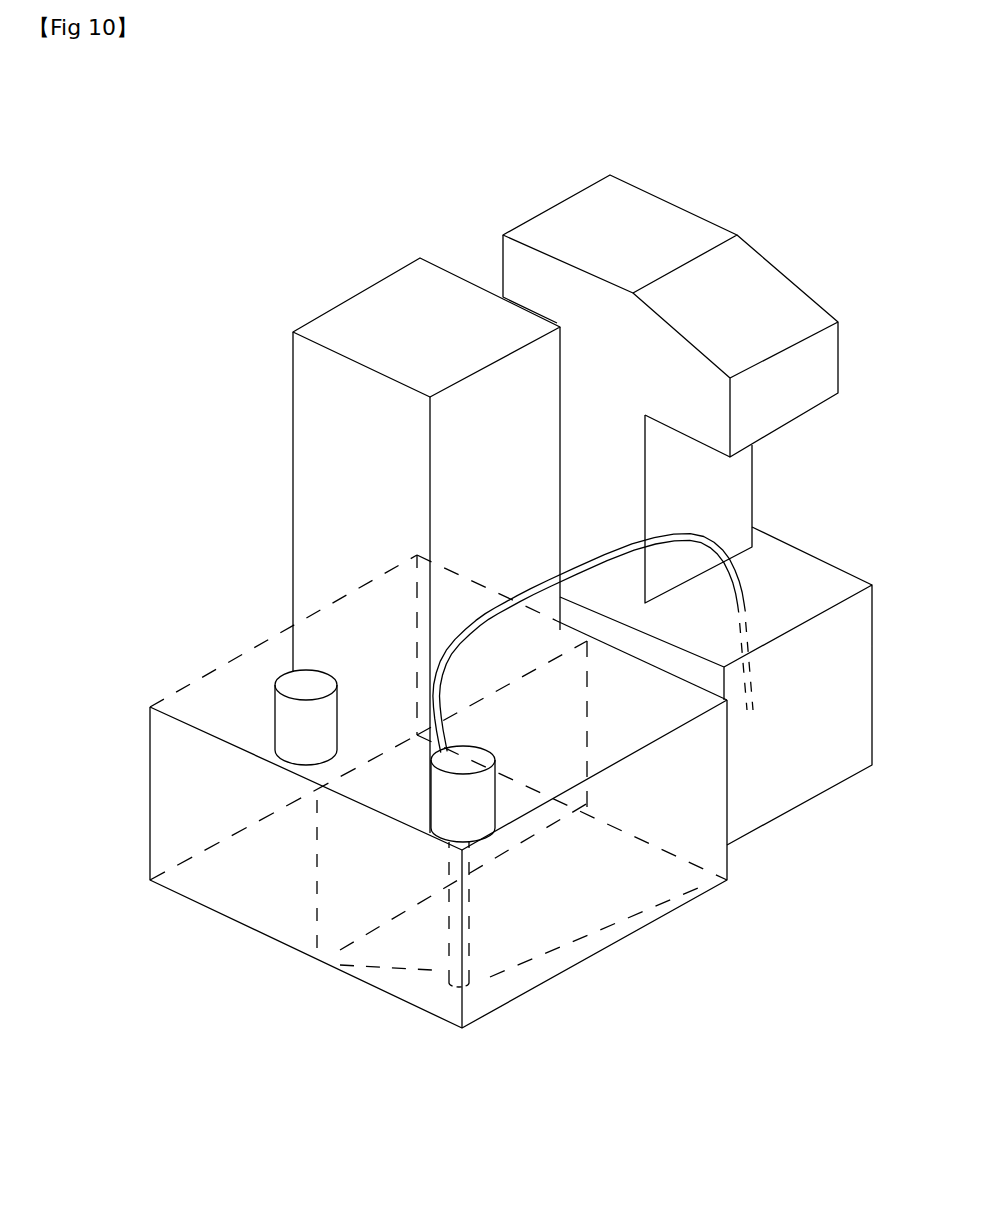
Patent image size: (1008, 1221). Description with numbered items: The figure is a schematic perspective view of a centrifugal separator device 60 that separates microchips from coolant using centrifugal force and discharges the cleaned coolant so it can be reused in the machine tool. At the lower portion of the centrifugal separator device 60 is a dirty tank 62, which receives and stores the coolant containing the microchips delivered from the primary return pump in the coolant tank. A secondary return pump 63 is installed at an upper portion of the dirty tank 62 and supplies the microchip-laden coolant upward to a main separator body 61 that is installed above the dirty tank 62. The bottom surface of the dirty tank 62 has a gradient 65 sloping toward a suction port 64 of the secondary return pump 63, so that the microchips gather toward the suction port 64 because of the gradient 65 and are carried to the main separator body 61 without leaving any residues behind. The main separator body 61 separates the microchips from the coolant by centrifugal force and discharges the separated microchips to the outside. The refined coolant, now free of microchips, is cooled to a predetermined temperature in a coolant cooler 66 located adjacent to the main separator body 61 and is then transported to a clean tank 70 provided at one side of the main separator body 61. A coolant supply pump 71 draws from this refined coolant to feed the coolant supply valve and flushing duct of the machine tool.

The centrifugal separator device 60 is at (458, 226).
The main separator body 61 is at (723, 472).
The dirty tank 62 is at (657, 921).
The secondary return pump 63 is at (457, 817).
The suction port 64 is at (468, 952).
The gradient 65 is at (547, 913).
The coolant cooler 66 is at (327, 473).
The clean tank 70 is at (187, 815).
The coolant supply pump 71 is at (303, 685).